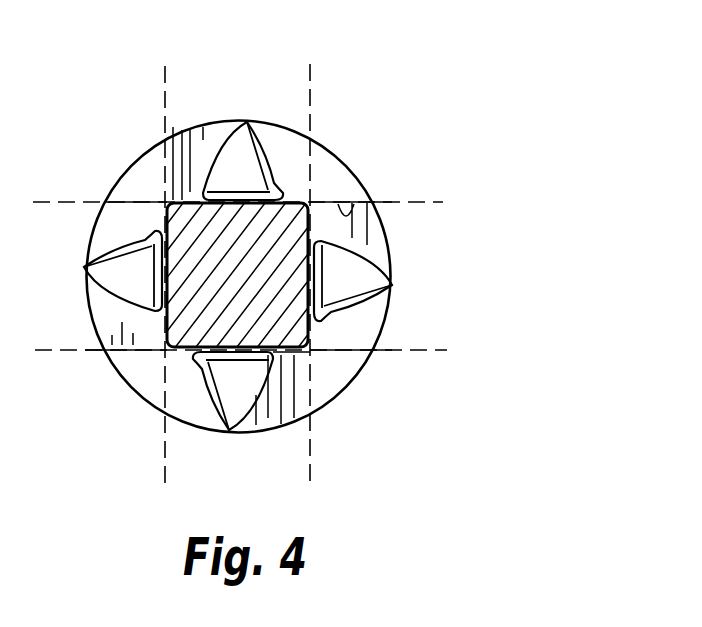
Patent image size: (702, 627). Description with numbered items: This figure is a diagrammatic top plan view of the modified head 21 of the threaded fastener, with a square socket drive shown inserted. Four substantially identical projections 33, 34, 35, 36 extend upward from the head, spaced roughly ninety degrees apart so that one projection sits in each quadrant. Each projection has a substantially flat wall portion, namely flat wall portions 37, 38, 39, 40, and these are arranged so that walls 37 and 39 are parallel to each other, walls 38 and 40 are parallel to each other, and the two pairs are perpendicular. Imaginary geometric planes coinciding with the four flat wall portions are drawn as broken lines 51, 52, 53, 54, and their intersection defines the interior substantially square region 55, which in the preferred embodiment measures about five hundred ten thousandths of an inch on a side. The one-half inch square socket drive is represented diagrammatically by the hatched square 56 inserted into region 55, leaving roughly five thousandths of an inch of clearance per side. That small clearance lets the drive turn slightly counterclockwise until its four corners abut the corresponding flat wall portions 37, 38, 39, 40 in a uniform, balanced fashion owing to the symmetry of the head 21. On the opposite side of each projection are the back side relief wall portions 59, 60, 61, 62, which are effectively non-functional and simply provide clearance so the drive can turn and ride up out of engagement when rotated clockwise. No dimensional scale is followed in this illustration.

The modified head 21 is at (504, 124).
The projection 33 is at (320, 170).
The projection 34 is at (350, 318).
The projection 35 is at (153, 392).
The projection 36 is at (122, 213).
The flat wall portion 37 is at (372, 208).
The flat wall portion 38 is at (298, 420).
The flat wall portion 39 is at (162, 314).
The flat wall portion 40 is at (170, 200).
The broken line 51 is at (33, 203).
The broken line 52 is at (312, 78).
The broken line 53 is at (63, 350).
The broken line 54 is at (168, 78).
The substantially square region 55 is at (144, 357).
The square 56 is at (313, 240).
The back side relief wall portion 59 is at (236, 155).
The back side relief wall portion 60 is at (335, 273).
The back side relief wall portion 61 is at (228, 396).
The back side relief wall portion 62 is at (127, 275).